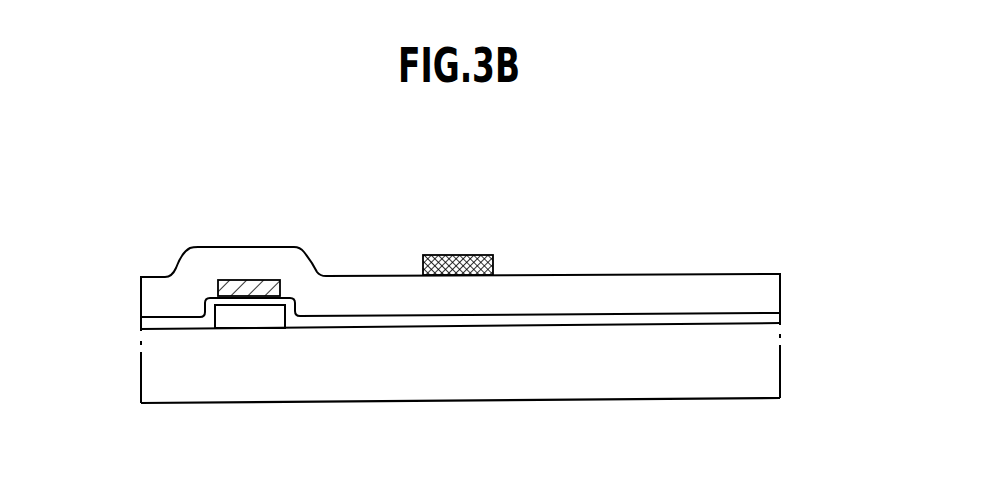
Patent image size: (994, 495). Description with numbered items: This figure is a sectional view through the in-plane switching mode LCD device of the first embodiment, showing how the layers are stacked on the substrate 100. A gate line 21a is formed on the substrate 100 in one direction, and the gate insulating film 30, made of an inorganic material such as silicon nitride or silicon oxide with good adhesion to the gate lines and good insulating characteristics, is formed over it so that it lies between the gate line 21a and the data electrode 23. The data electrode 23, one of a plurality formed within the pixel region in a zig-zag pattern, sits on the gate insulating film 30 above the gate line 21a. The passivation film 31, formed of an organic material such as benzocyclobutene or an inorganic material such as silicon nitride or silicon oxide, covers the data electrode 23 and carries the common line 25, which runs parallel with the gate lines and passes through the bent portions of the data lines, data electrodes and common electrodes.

The substrate 100 is at (772, 372).
The gate insulating film 30 is at (772, 315).
The passivation film 31 is at (772, 287).
The gate line 21a is at (252, 330).
The data electrode 23 is at (250, 280).
The common line 25 is at (458, 255).